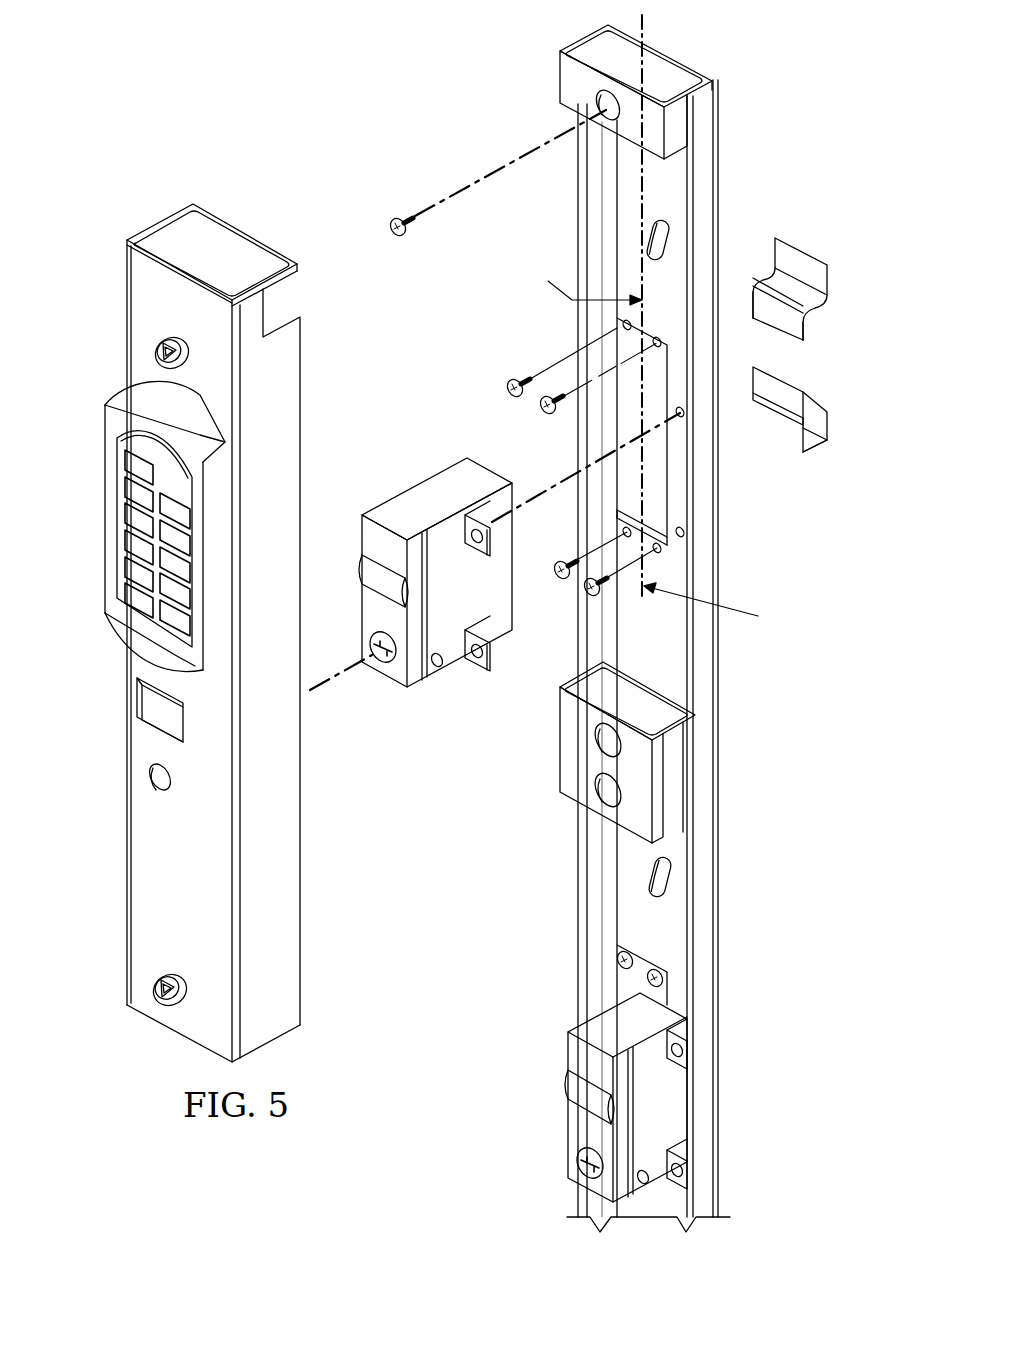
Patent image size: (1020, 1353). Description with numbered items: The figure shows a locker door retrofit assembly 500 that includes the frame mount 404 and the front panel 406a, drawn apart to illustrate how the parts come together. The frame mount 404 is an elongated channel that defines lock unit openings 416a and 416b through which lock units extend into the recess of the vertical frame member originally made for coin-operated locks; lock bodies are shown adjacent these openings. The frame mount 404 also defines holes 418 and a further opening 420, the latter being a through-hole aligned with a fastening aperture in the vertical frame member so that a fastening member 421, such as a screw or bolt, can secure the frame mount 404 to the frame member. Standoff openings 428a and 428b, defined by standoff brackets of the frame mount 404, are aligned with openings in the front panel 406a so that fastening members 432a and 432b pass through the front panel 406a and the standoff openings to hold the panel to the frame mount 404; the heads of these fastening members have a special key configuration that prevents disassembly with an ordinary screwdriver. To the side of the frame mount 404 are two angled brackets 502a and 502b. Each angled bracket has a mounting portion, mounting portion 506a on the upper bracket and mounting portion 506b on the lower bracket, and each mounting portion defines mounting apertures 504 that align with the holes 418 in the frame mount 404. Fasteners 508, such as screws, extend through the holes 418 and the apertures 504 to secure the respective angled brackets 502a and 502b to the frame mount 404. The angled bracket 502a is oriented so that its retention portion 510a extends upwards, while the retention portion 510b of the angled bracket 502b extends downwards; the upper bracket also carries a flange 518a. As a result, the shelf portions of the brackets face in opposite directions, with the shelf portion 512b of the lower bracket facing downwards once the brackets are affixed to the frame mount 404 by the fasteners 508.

The locker door retrofit assembly 500 is at (237, 135).
The frame mount 404 is at (712, 128).
The front panel 406a is at (138, 288).
The fastening member 432a is at (157, 352).
The fastening member 432b is at (170, 1008).
The standoff opening 428a is at (600, 103).
The standoff opening 428b is at (600, 740).
The fastening member 421 is at (395, 222).
The opening 420 is at (640, 240).
The holes 418 is at (627, 322).
The fasteners 508 is at (510, 380).
The lock unit opening 416a is at (657, 445).
The lock unit opening 416b is at (650, 1040).
The angled bracket 502a is at (810, 226).
The angled bracket 502b is at (845, 505).
The upper flange of clip 518a is at (772, 250).
The retention portion 510a is at (830, 283).
The retention portion 510b is at (833, 432).
The mounting apertures 504 is at (768, 322).
The mounting portion 506a is at (805, 335).
The mounting portion 506b is at (803, 400).
The shelf portion 512b is at (780, 445).